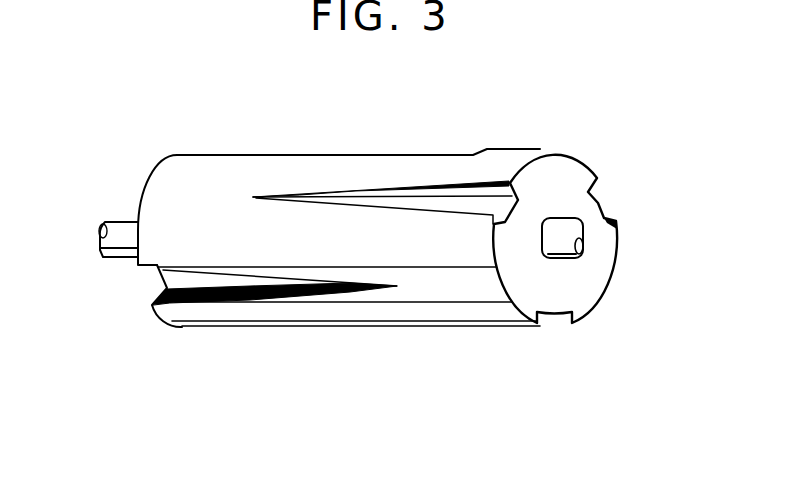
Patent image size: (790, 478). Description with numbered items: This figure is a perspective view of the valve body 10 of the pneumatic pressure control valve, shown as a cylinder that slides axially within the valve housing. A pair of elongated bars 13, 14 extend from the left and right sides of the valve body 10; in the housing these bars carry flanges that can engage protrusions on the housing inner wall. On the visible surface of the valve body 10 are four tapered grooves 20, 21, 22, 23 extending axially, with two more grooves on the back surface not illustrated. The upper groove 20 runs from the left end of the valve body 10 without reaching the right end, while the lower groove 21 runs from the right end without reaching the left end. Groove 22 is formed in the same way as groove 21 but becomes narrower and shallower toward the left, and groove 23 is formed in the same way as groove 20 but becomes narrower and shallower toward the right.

The valve body 10 is at (571, 128).
The elongated bar 13 is at (568, 230).
The elongated bar 14 is at (120, 228).
The upper groove 20 is at (322, 154).
The lower groove 21 is at (367, 327).
The groove 22 is at (447, 203).
The groove 23 is at (200, 280).